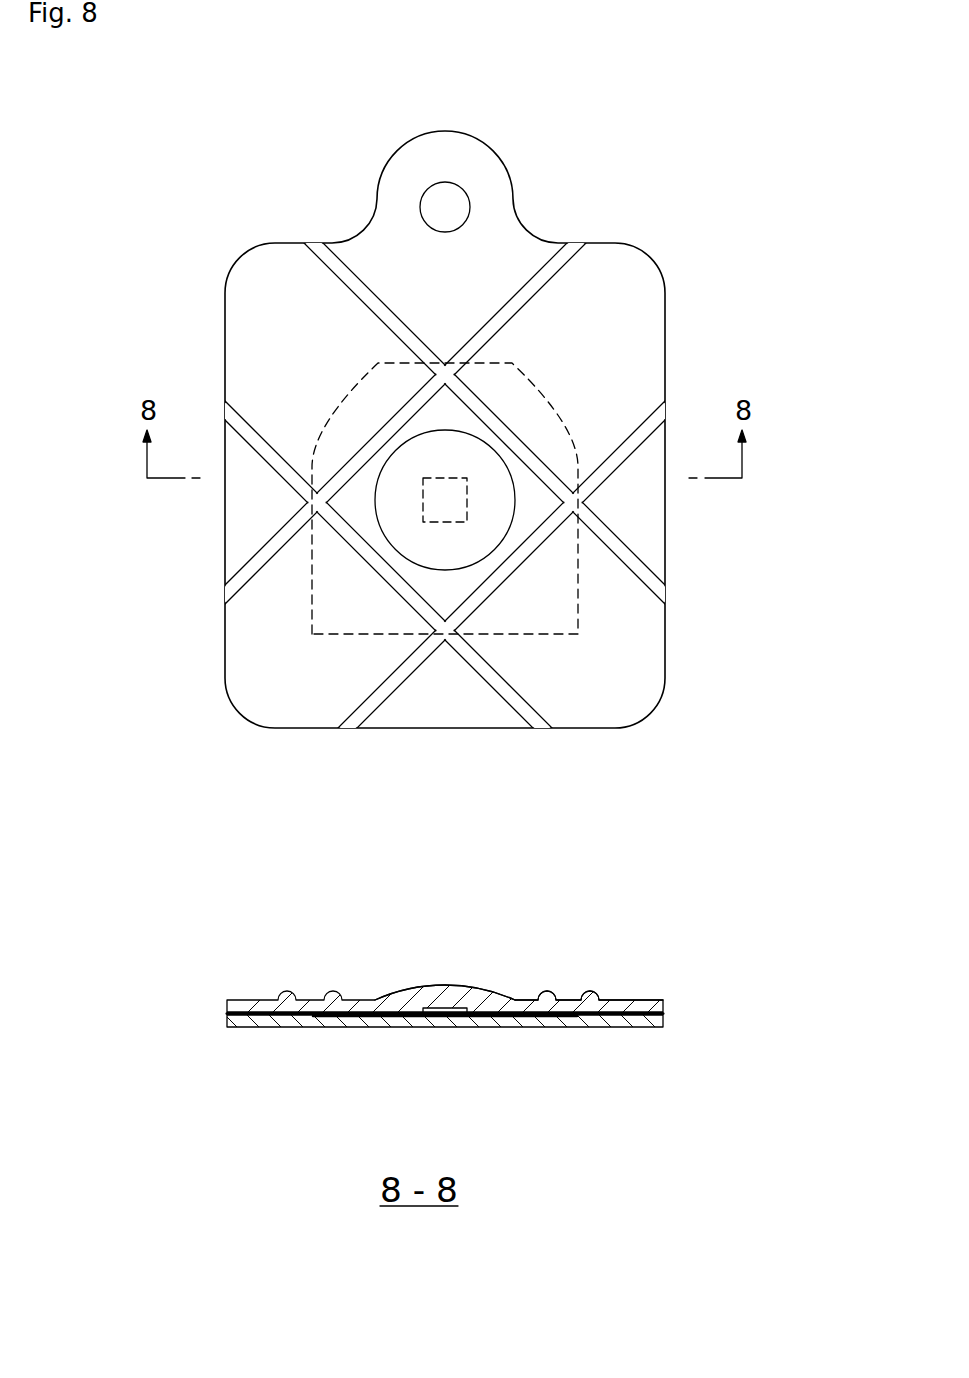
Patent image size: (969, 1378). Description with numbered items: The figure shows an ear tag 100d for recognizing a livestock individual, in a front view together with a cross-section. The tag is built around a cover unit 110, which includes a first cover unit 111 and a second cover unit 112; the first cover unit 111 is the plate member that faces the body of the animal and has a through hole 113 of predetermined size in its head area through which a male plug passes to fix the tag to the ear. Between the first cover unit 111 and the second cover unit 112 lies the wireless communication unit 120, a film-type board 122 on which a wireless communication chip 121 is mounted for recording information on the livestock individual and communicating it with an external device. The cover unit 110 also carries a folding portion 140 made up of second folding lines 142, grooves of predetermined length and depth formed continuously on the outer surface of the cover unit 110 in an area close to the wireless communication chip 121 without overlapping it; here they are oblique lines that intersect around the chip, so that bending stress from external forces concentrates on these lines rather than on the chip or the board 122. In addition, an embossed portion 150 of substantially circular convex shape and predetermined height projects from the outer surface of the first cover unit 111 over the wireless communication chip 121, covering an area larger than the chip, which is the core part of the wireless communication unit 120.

The ear tag 100d is at (268, 116).
The cover unit 110 is at (630, 663).
The first cover unit 111 is at (240, 1002).
The second cover unit 112 is at (235, 1018).
The through hole 113 is at (447, 186).
The wireless communication unit 120 is at (404, 812).
The wireless communication chip 121 is at (450, 523).
The board 122 is at (536, 636).
The folding portion 140 is at (595, 973).
The second folding line 142 is at (330, 260).
The embossed portion 150 is at (497, 522).